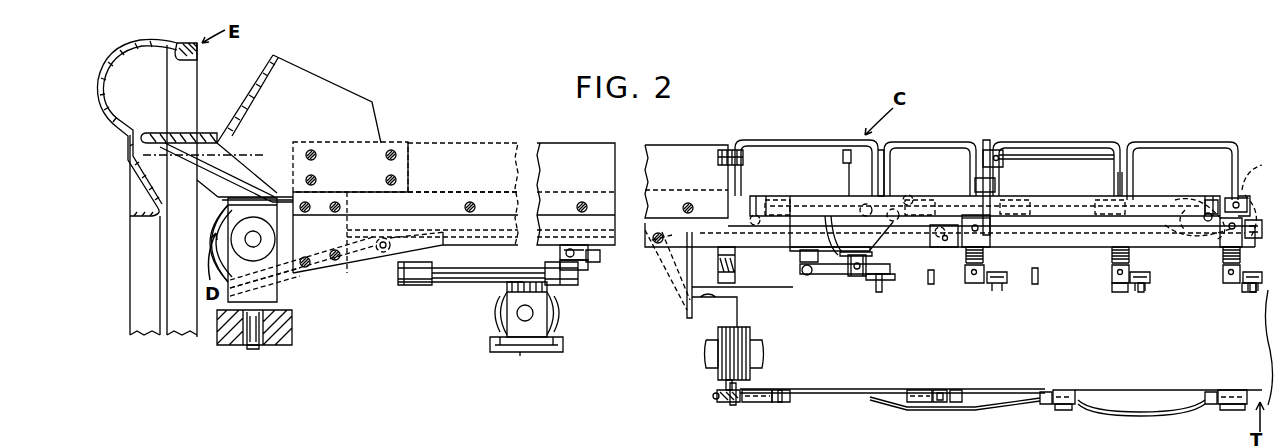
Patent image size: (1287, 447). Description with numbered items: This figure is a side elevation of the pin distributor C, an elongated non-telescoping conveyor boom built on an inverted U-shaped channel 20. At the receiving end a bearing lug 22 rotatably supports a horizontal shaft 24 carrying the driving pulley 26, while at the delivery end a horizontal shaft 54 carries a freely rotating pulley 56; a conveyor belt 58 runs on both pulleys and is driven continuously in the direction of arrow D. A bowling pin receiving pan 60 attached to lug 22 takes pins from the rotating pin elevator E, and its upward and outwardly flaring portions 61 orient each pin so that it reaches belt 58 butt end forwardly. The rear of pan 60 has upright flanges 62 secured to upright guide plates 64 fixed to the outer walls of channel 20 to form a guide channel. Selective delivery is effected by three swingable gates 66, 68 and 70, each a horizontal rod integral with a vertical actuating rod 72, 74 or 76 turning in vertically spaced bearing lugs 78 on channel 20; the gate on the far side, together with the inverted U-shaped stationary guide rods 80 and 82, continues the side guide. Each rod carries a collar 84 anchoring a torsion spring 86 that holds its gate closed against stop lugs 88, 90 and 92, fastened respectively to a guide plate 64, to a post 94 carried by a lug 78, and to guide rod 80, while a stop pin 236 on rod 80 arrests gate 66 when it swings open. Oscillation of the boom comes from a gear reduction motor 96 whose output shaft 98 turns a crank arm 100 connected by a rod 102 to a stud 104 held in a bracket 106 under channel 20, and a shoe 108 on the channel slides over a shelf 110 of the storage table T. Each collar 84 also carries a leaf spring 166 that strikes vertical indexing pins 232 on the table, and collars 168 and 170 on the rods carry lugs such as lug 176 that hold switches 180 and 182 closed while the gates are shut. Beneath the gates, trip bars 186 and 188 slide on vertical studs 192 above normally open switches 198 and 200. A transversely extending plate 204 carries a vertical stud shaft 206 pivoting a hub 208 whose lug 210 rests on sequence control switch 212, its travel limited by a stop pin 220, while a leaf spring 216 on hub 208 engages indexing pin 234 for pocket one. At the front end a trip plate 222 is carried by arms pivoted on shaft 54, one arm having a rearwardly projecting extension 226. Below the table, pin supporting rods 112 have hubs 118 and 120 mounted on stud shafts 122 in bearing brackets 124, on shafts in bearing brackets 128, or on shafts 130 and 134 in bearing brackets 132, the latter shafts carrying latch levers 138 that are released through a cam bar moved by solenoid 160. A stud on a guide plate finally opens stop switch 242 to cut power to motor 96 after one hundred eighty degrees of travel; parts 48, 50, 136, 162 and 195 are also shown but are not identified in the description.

The inverted U-shaped channel 20 is at (645, 222).
The bearing lug 22 is at (253, 273).
The horizontal shaft 24 is at (253, 243).
The pulley 26 is at (208, 243).
The bolt 48 is at (253, 349).
The base block 50 is at (292, 328).
The horizontal shaft 54 is at (1206, 214).
The pulley 56 is at (1175, 200).
The conveyor belt 58 is at (470, 192).
The bowling pin receiving pan 60 is at (180, 133).
The flaring portions 61 is at (300, 77).
The upright flanges 62 is at (395, 142).
The upright guide plates 64 is at (672, 147).
The swingable gate 66 is at (922, 142).
The swingable gate 68 is at (1088, 155).
The swingable gate 70 is at (1050, 142).
The vertical actuating rod 72 is at (970, 283).
The vertical actuating rod 74 is at (1225, 290).
The vertical actuating rod 76 is at (1250, 242).
The bearing lugs 78 is at (1230, 198).
The inverted U-shaped stationary guide rod 80 is at (778, 140).
The inverted U-shaped stationary guide rod 82 is at (1177, 142).
The collar 84 is at (1223, 283).
The torsion spring 86 is at (1222, 262).
The stop lug 88 is at (718, 160).
The stop lug 90 is at (1007, 168).
The stop lug 92 is at (881, 150).
The post 94 is at (987, 140).
The gear reduction motor 96 is at (503, 318).
The output shaft 98 is at (552, 278).
The crank arm 100 is at (433, 284).
The rod 102 is at (478, 279).
The stud 104 is at (575, 279).
The bracket 106 is at (588, 256).
The shoe 108 is at (728, 256).
The shelf 110 is at (727, 297).
The pin supporting rod 112 is at (1120, 412).
The hub 118 is at (1208, 404).
The hub 120 is at (960, 403).
The stud shafts 122 is at (1250, 390).
The bearing brackets 124 is at (1228, 410).
The bearing brackets 128 is at (1060, 410).
The shaft 130 is at (785, 390).
The bearing brackets 132 is at (765, 402).
The shaft 134 is at (905, 390).
The fitting 136 is at (935, 402).
The latch lever 138 is at (716, 400).
The solenoid 160 is at (718, 367).
The plate 162 is at (733, 405).
The leaf spring 166 is at (1250, 284).
The collar 168 is at (985, 232).
The collar 170 is at (1216, 222).
The projecting lug 176 is at (1255, 240).
The switch 180 is at (950, 196).
The switch 182 is at (1258, 232).
The trip bar 186 is at (790, 212).
The trip bar 188 is at (1067, 215).
The vertical studs 192 is at (770, 198).
The pin 195 is at (755, 218).
The normally open switch 198 is at (863, 204).
The normally open switch 200 is at (1108, 240).
The transversely extending plate 204 is at (892, 229).
The vertical stud shaft 206 is at (852, 278).
The hub 208 is at (843, 290).
The horizontally extending lug 210 is at (825, 276).
The sequence control switch 212 is at (800, 268).
The leaf spring 216 is at (881, 282).
The vertical stop pin 220 is at (824, 235).
The trip plate 222 is at (1259, 173).
The rearwardly projecting extension 226 is at (1193, 223).
The indexing pin 232 is at (1242, 292).
The indexing pin 234 is at (876, 293).
The stop pin 236 is at (845, 165).
The stop switch 242 is at (655, 255).